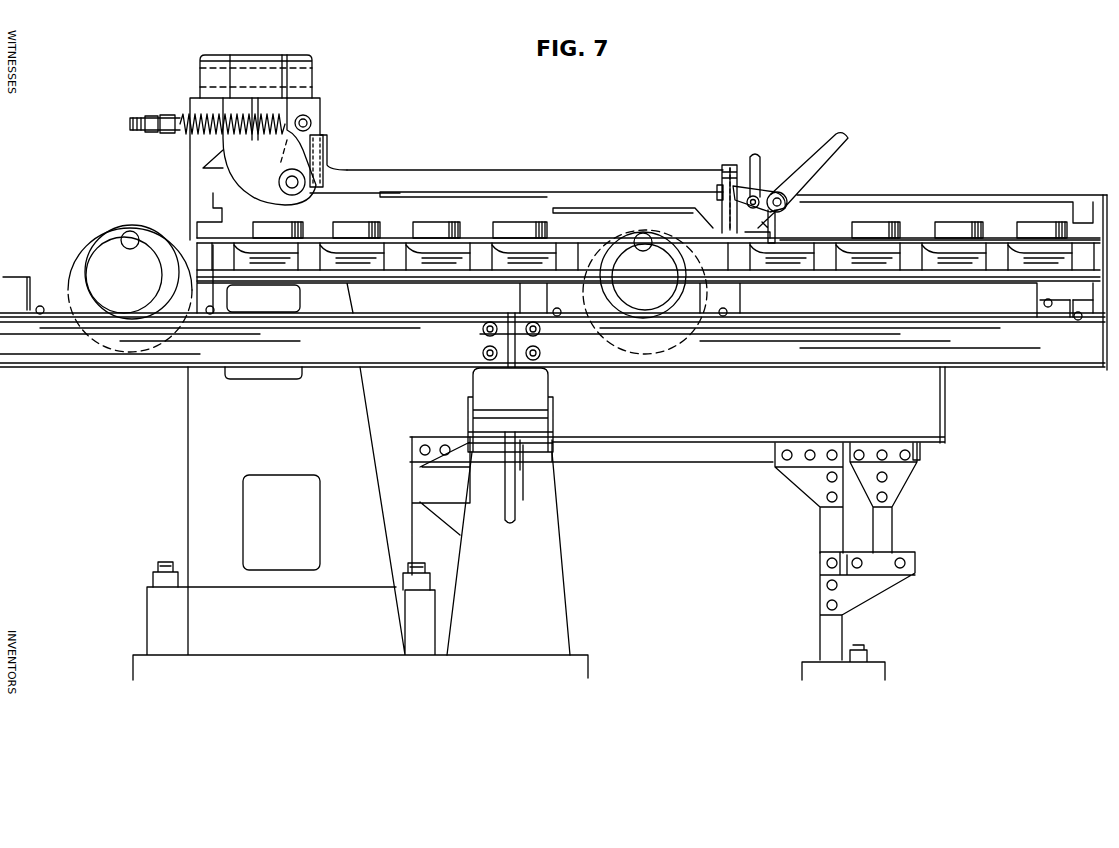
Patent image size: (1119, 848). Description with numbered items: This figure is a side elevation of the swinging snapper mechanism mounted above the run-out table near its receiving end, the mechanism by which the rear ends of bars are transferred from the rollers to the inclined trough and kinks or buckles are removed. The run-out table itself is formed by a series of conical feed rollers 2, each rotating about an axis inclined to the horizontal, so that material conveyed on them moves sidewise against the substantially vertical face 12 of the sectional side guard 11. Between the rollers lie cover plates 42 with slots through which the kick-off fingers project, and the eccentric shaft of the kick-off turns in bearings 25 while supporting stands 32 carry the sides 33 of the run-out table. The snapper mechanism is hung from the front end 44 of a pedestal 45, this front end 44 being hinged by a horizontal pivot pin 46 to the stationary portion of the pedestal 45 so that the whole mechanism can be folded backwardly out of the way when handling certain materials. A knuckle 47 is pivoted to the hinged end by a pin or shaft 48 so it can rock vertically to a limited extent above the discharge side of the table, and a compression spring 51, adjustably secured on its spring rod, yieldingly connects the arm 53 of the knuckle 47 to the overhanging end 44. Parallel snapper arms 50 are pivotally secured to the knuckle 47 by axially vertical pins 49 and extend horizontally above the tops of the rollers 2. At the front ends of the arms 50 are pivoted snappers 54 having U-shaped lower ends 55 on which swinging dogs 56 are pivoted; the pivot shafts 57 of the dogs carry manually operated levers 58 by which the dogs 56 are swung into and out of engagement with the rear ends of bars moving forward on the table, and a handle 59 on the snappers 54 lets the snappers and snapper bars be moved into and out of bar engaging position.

The conical feed rollers 2 is at (387, 289).
The sectional side guard 11 is at (706, 221).
The substantially vertical face 12 is at (303, 228).
The bearings 25 is at (510, 410).
The supporting stands 32 is at (508, 543).
The sides of the run-out table 33 is at (40, 352).
The cover plates 42 is at (551, 278).
The front end of pedestal 44 is at (280, 48).
The pedestal 45 is at (360, 523).
The horizontal pivot pin 46 is at (298, 78).
The knuckle 47 is at (318, 120).
The pin or shaft 48 is at (295, 182).
The axially vertical pins 49 is at (328, 133).
The snapper arms 50 is at (525, 178).
The compression spring 51 is at (184, 113).
The arm of the knuckle 53 is at (312, 118).
The snappers 54 is at (771, 192).
The U-shaped lower ends 55 is at (762, 243).
The swinging dogs 56 is at (780, 230).
The pivot shafts 57 is at (780, 197).
The manually operated levers 58 is at (844, 140).
The handle 59 is at (756, 152).